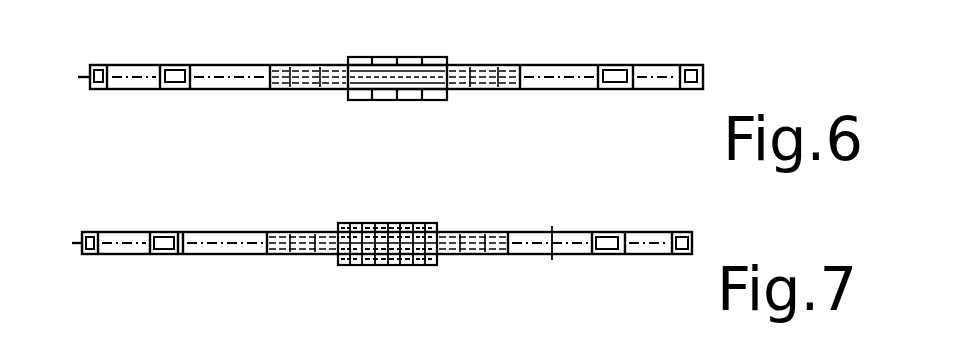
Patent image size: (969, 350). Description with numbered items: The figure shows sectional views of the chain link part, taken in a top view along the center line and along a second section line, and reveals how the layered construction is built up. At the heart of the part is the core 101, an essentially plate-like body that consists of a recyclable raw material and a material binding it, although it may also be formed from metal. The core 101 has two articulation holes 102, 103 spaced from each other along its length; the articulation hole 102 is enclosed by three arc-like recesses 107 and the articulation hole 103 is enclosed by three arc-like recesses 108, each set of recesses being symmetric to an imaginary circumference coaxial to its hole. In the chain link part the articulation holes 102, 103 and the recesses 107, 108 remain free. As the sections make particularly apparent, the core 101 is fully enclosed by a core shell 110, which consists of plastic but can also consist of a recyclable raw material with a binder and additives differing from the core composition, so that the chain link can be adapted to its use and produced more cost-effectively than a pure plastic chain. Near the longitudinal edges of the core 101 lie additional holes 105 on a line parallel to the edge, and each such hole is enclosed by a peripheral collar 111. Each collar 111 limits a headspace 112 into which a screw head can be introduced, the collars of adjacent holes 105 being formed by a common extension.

In FIG. 6, the core 101 is at (457, 89).
In FIG. 7, the core 101 is at (510, 254).
In FIG. 6, the articulation hole 102 is at (573, 89).
In FIG. 6, the articulation hole 103 is at (252, 89).
In FIG. 7, the articulation hole 103 is at (213, 262).
In FIG. 7, the hole 105 is at (450, 292).
In FIG. 6, the recess 107 is at (662, 89).
In FIG. 6, the recess 108 is at (145, 89).
In FIG. 7, the recess 108 is at (123, 232).
In FIG. 7, the core shell 110 is at (473, 232).
In FIG. 6, the collar 111 is at (432, 56).
In FIG. 7, the collar 111 is at (343, 223).
In FIG. 7, the headspace 112 is at (405, 265).